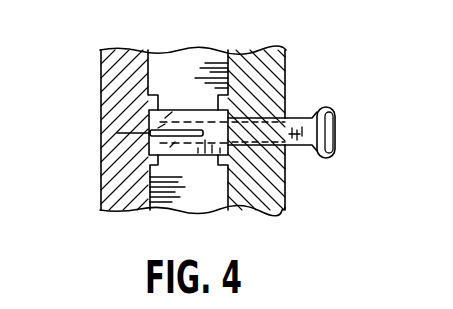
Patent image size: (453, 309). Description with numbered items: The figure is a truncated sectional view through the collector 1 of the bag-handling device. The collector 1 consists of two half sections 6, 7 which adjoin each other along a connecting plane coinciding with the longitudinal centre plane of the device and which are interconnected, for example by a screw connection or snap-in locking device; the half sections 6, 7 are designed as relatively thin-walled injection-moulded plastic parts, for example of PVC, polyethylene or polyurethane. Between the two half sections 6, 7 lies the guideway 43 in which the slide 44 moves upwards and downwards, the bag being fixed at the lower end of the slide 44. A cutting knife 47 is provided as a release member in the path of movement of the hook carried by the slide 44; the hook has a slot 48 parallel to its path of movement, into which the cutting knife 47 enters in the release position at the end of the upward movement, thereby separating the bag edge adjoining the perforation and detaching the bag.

The collector 1 is at (94, 219).
The half section 6 is at (101, 70).
The half section 7 is at (285, 70).
The guideway 43 is at (151, 95).
The slide 44 is at (188, 157).
The cutting knife 47 is at (102, 155).
The slot 48 is at (180, 128).